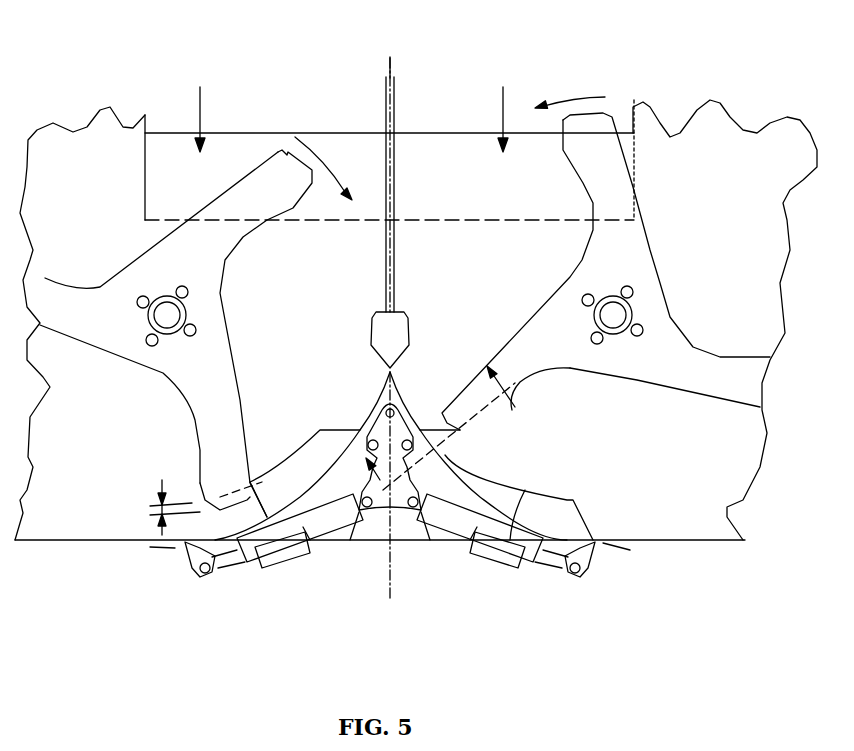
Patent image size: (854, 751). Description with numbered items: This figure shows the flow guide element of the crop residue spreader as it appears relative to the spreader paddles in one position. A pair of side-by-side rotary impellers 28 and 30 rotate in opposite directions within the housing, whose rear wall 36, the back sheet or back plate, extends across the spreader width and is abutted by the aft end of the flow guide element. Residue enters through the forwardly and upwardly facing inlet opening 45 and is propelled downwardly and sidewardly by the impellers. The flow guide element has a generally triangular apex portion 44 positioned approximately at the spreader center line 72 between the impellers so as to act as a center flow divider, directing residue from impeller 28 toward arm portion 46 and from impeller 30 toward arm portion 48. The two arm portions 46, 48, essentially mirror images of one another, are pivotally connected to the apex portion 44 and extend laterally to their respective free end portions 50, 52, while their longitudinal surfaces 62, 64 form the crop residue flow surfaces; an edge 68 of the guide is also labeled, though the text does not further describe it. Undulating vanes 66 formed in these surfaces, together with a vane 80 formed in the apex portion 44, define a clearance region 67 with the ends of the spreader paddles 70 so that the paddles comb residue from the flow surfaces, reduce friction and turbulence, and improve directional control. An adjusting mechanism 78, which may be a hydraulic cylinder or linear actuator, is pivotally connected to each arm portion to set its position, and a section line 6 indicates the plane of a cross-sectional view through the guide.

The section line 6 is at (430, 417).
The rotary impeller 28 is at (630, 250).
The rotary impeller 30 is at (112, 335).
The rear wall 36 is at (88, 480).
The apex portion 44 is at (393, 116).
The inlet opening 45 is at (518, 133).
The arm portion 46 is at (525, 490).
The arm portion 48 is at (247, 480).
The free end portion 50 is at (617, 540).
The free end portion 52 is at (150, 547).
The longitudinal surface 62 is at (445, 468).
The longitudinal surface 64 is at (328, 430).
The vane 66 is at (287, 467).
The clearance region 67 is at (160, 505).
The blade edge 68 is at (355, 440).
The spreader paddle 70 is at (50, 270).
The center line 72 is at (392, 65).
The adjusting mechanism 78 is at (290, 570).
The vane 80 is at (372, 337).